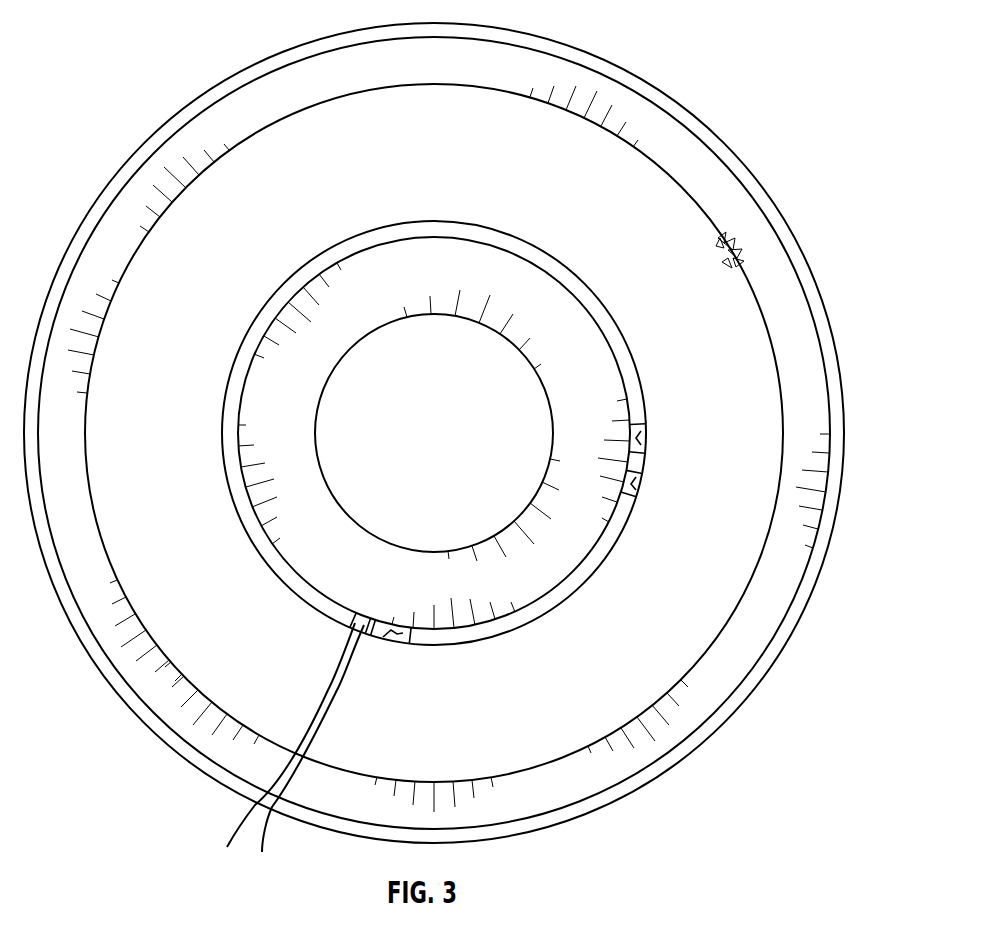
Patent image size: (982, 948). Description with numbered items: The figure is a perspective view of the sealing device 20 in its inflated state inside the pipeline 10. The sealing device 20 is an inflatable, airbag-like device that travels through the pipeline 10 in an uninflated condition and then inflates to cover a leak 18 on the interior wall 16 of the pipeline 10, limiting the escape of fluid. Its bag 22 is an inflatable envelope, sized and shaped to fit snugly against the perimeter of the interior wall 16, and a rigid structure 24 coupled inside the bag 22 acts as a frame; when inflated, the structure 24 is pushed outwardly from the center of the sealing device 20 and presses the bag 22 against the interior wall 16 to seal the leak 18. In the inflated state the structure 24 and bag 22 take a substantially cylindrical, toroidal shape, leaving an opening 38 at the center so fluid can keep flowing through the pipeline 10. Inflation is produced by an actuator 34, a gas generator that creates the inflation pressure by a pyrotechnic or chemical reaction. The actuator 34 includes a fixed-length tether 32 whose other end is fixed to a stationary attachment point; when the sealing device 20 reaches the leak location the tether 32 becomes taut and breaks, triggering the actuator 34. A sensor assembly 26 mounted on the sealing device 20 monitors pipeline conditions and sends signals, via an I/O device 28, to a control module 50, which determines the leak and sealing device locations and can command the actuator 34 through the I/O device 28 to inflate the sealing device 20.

The pipeline 10 is at (162, 127).
The sealing device 20 is at (149, 224).
The bag 22 is at (708, 603).
The structure 24 is at (495, 228).
The sensor assembly 26 is at (645, 437).
The I/O device 28 is at (640, 483).
The tether 32 is at (328, 688).
The actuator 34 is at (365, 612).
The control module 50 is at (388, 643).
The opening 38 is at (540, 298).
The leak 18 is at (730, 248).
The interior wall 16 is at (787, 285).